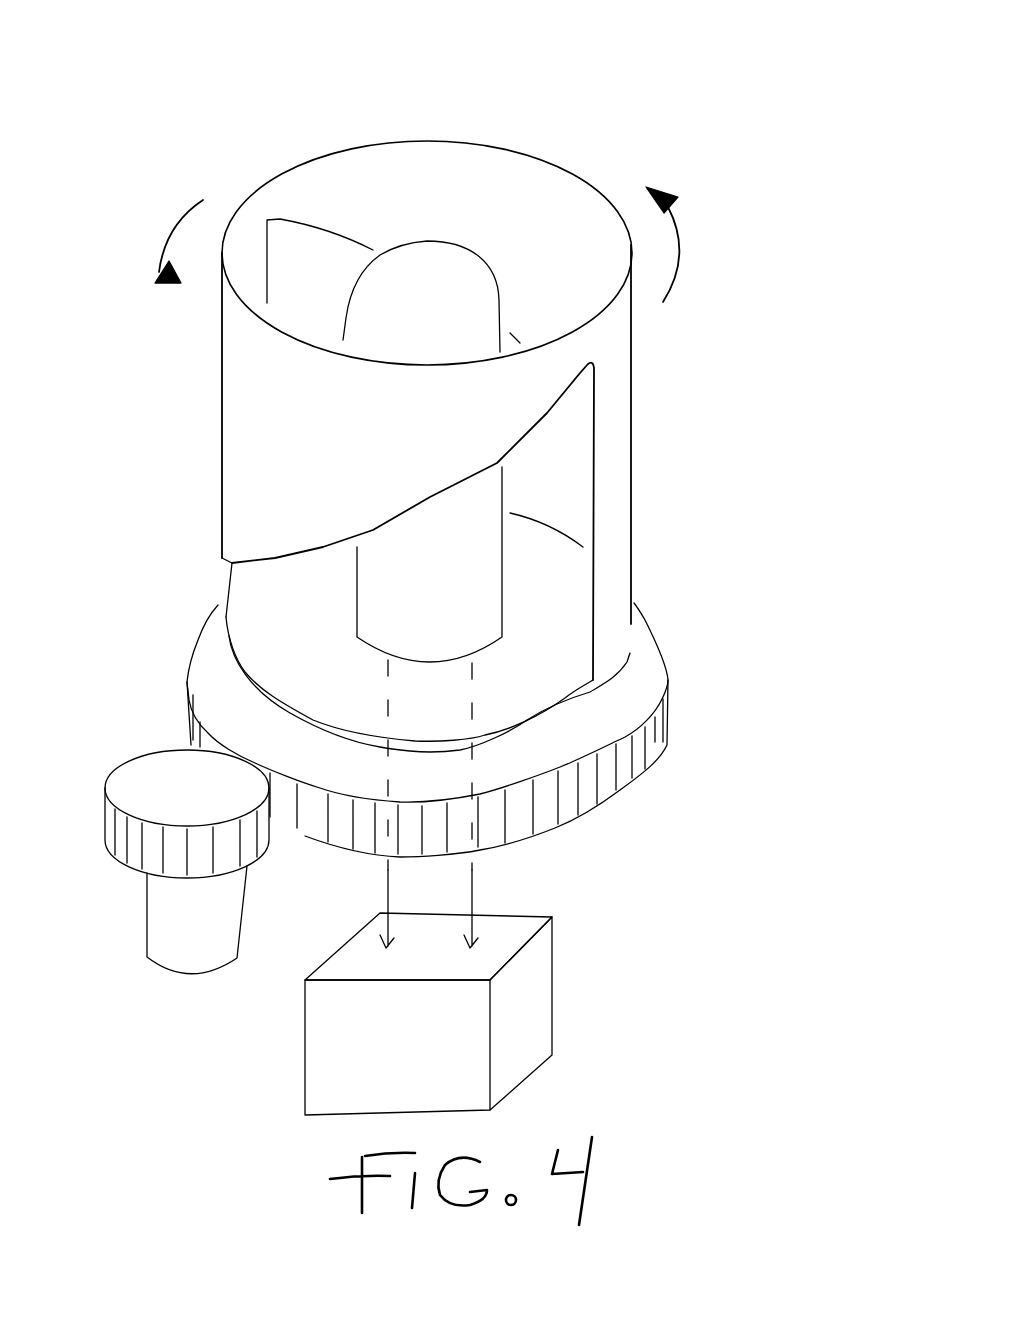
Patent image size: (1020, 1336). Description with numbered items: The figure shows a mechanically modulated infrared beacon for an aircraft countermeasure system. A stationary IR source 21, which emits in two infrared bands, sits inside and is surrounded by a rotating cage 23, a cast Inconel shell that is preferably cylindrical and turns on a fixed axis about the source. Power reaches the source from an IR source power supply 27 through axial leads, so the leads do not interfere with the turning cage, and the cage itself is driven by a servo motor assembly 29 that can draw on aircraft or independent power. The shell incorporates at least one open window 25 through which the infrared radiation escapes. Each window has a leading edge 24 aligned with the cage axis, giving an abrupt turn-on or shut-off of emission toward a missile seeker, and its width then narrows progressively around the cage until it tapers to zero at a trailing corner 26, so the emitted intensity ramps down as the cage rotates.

The IR source 21 is at (507, 492).
The rotating cage 23 is at (263, 173).
The leading edge 24 is at (57, 358).
The window 25 is at (236, 29).
The trailing corner 26 is at (66, 528).
The IR source power supply 27 is at (552, 998).
The servo motor assembly 29 is at (140, 917).